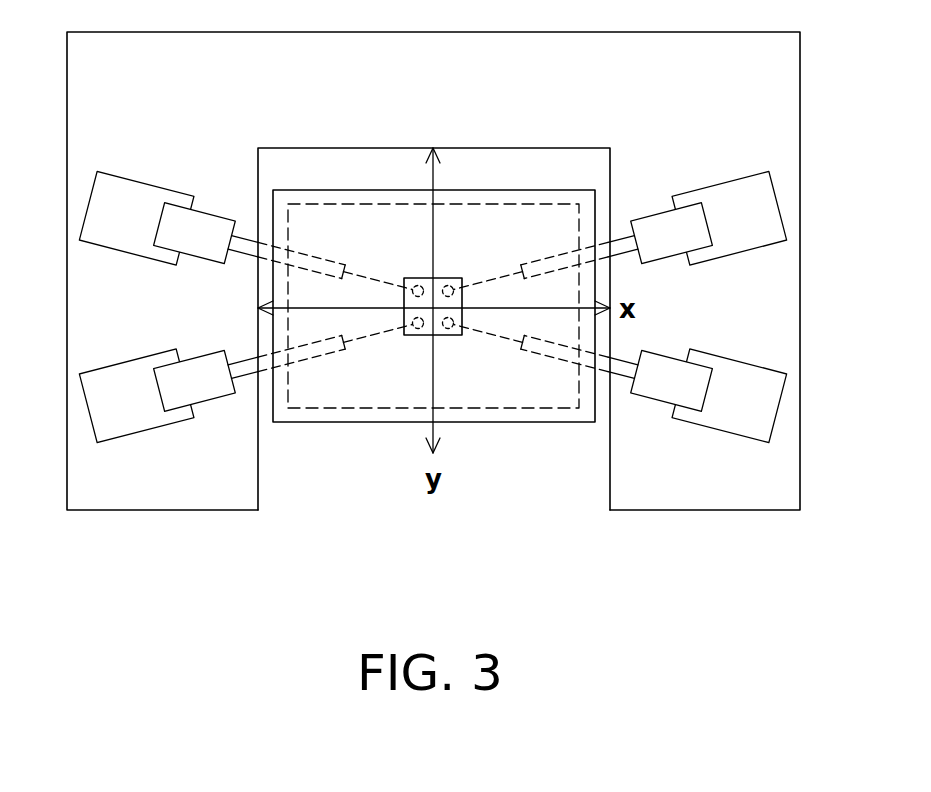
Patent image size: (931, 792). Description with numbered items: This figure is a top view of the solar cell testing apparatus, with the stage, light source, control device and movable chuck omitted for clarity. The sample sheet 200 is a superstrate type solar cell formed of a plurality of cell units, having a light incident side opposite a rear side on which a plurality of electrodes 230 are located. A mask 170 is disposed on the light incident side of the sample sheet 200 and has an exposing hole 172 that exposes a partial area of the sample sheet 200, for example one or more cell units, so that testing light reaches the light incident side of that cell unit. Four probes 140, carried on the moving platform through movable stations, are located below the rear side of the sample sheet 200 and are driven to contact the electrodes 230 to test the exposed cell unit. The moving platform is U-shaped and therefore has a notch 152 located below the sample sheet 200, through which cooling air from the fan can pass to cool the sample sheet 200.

The probes 140 is at (362, 337).
The notch 152 is at (287, 503).
The mask 170 is at (521, 423).
The exposing hole 172 is at (449, 337).
The sample sheet 200 is at (553, 408).
The electrodes 230 is at (418, 330).